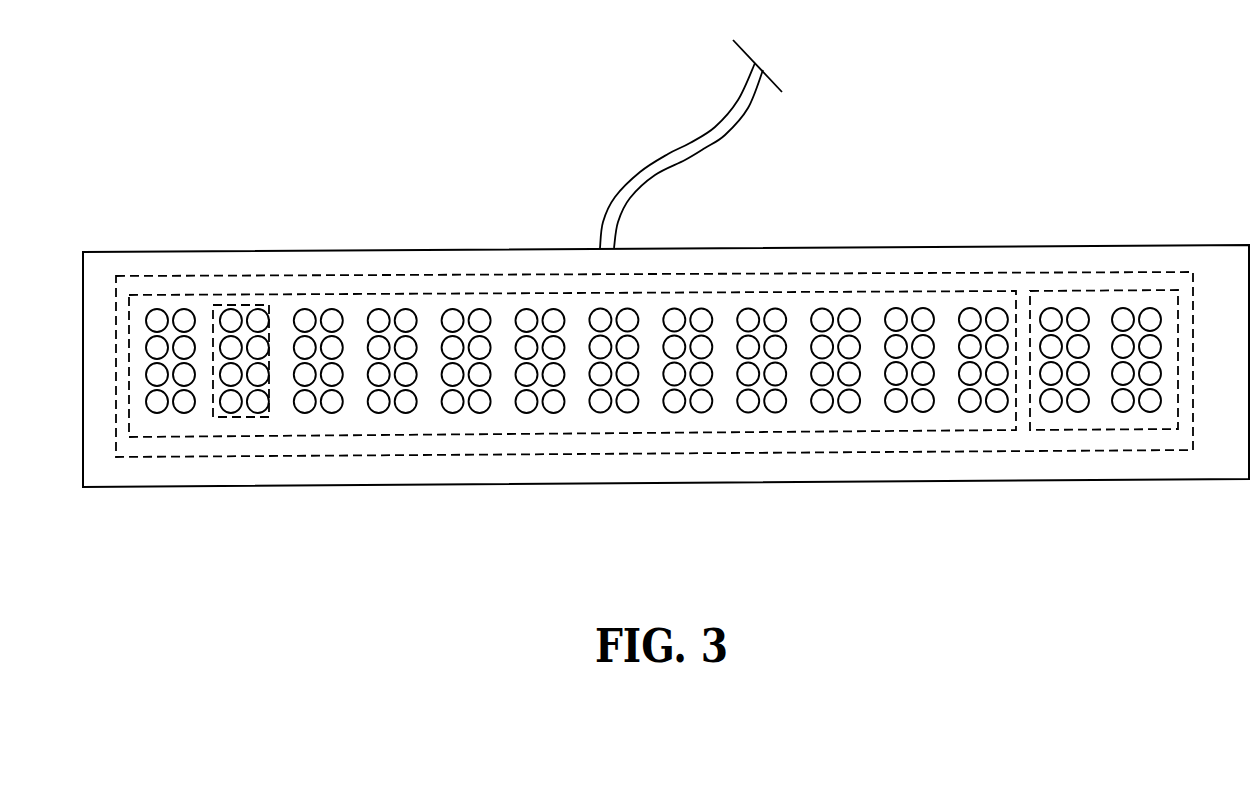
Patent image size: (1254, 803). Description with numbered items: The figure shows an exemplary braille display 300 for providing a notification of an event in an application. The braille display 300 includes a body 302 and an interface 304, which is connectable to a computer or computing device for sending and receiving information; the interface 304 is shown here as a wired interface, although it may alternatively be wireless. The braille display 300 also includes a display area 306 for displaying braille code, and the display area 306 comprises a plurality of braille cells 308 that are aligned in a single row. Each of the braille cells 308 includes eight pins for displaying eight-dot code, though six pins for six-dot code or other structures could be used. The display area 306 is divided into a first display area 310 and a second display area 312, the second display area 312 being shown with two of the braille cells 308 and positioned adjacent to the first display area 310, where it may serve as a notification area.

The braille display 300 is at (521, 166).
The body 302 is at (832, 247).
The interface 304 is at (708, 142).
The display area 306 is at (268, 277).
The braille cell 308 is at (243, 417).
The first display area 310 is at (438, 295).
The second display area 312 is at (1087, 291).